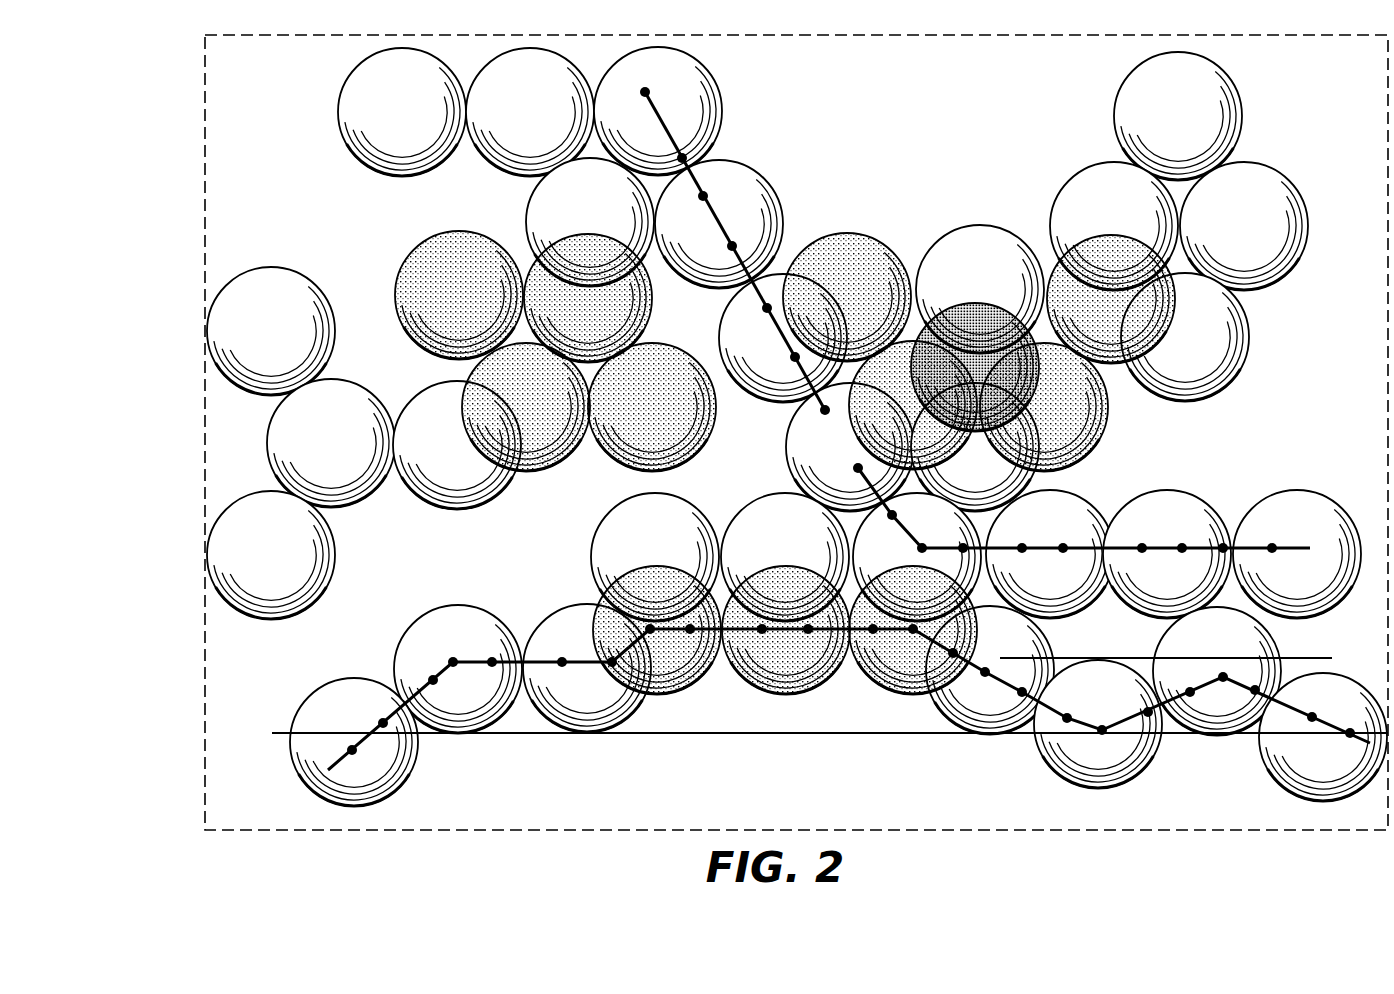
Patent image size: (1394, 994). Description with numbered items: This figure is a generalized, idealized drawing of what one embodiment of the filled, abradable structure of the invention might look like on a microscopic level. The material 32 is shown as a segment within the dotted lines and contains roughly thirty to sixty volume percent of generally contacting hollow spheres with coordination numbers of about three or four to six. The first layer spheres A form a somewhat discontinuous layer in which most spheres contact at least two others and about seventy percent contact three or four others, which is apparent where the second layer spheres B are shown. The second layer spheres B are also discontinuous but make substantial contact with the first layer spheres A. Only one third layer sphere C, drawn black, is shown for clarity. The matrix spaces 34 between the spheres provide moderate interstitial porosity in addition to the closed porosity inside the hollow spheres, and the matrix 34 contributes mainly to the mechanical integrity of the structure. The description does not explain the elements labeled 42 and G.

The material 32 is at (852, 107).
The matrix spaces 34 is at (1242, 488).
The reference planes / lines 42 is at (1138, 658).
The first layer spheres A is at (553, 613).
The second layer spheres B is at (680, 430).
The third layer sphere C is at (962, 307).
The gap / grid line G is at (583, 663).